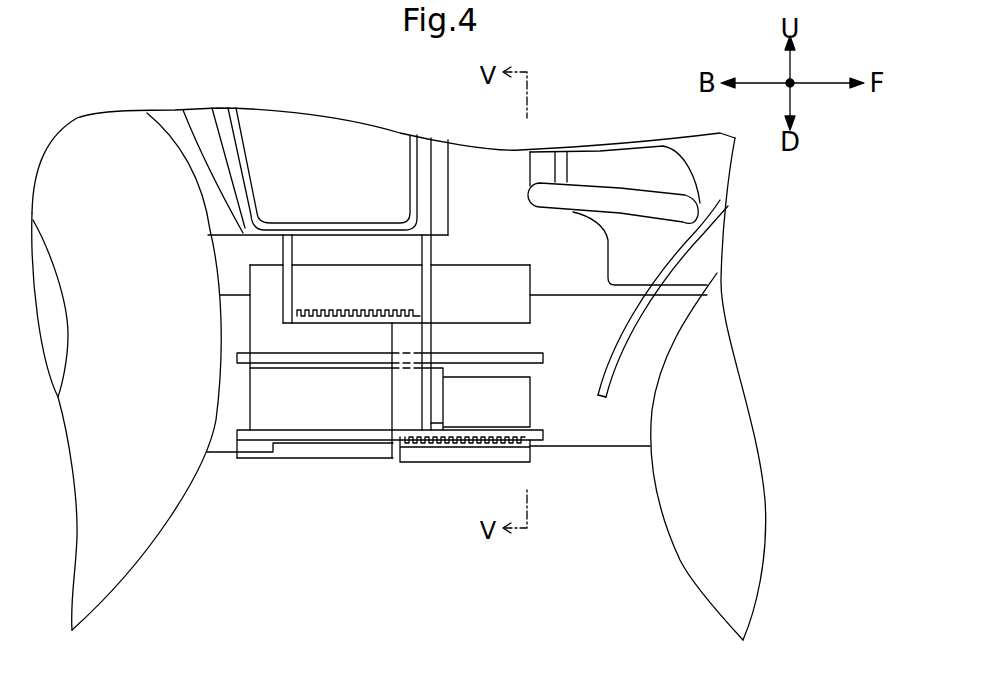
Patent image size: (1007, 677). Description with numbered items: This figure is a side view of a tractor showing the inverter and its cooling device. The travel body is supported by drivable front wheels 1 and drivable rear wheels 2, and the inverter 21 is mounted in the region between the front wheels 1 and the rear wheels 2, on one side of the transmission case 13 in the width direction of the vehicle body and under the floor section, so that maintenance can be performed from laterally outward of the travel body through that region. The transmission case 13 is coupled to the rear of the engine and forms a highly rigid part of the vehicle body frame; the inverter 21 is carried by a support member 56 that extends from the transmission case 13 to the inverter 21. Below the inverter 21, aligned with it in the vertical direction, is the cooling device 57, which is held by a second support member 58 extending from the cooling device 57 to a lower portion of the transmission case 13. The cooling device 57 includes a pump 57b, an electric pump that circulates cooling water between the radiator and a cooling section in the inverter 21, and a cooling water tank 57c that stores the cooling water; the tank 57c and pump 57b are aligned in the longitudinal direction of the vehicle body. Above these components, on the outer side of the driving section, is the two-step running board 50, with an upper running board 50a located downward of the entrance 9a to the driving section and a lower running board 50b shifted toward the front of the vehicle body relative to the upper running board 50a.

The front wheels 1 is at (678, 563).
The rear wheels 2 is at (147, 560).
The entrance 9a is at (325, 187).
The transmission case 13 is at (625, 433).
The inverter 21 is at (475, 280).
The two-step running board 50 is at (314, 411).
The upper running board 50a is at (324, 320).
The lower running board 50b is at (443, 448).
The support member 56 is at (512, 358).
The cooling device 57 is at (410, 474).
The pump 57b is at (520, 410).
The cooling water tank 57c is at (360, 413).
The support member 58 is at (263, 436).